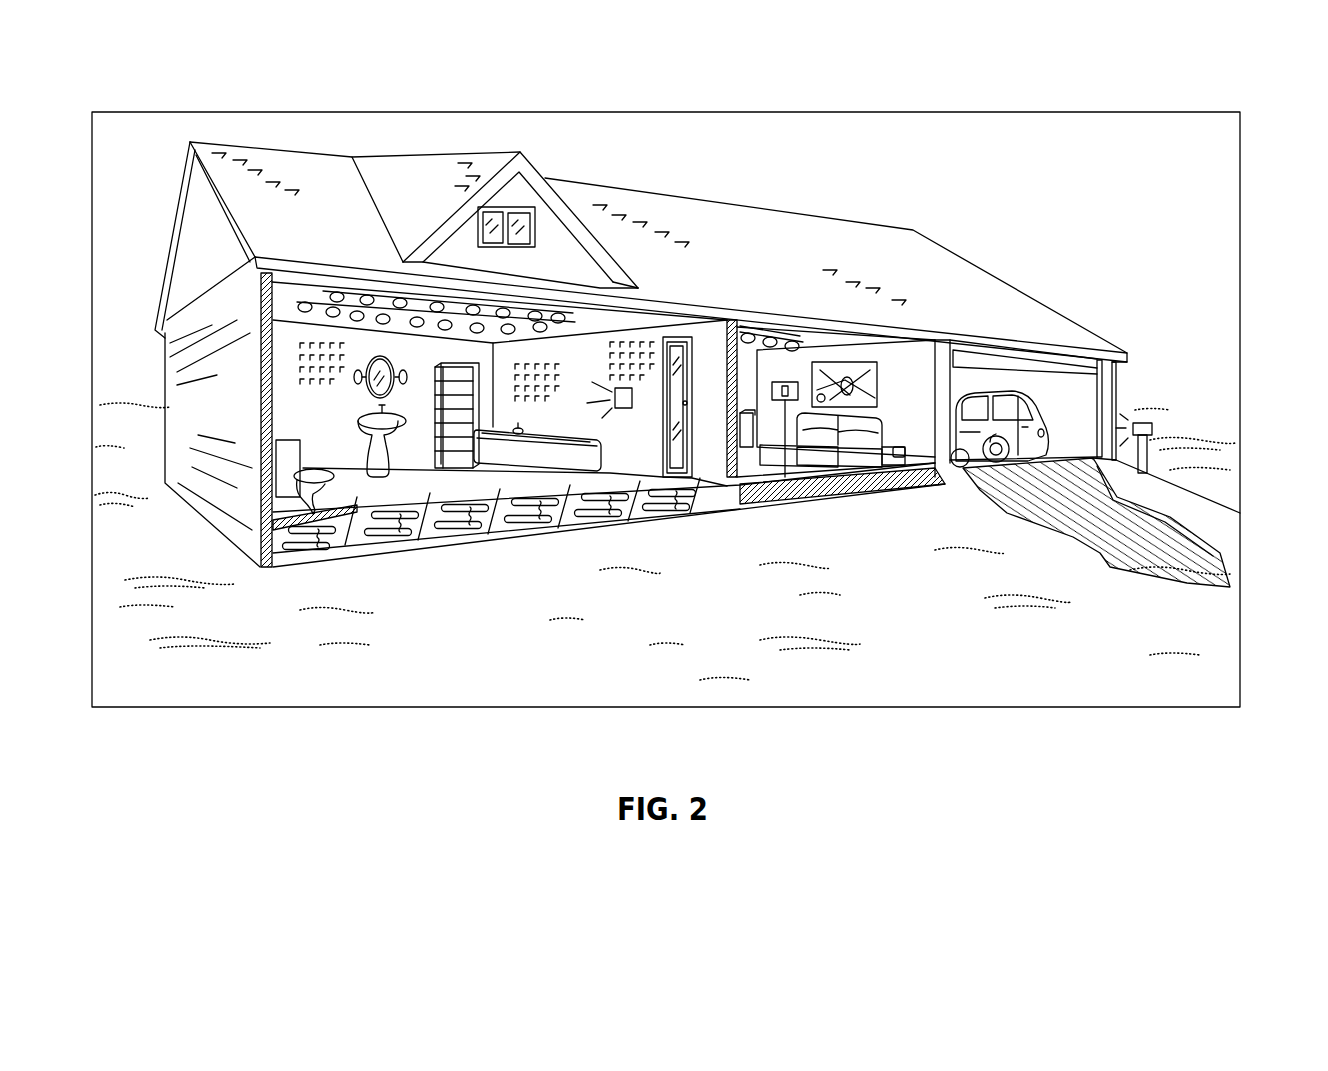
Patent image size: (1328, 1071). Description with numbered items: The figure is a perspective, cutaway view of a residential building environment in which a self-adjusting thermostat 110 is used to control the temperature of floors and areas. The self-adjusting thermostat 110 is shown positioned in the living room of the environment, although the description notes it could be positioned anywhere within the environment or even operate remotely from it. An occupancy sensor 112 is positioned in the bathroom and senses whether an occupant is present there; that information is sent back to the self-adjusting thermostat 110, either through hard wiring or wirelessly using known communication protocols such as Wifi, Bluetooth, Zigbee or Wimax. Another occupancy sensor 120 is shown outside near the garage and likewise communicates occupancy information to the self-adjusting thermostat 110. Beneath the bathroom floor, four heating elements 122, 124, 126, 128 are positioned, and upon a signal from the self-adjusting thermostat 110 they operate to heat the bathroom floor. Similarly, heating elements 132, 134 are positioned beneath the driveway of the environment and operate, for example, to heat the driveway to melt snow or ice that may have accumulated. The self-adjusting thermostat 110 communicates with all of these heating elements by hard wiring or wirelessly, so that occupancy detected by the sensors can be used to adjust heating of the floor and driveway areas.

The self-adjusting thermostat 110 is at (962, 103).
The occupancy sensor 112 is at (622, 410).
The occupancy sensor 120 is at (1150, 432).
The heating element 122 is at (508, 530).
The heating element 124 is at (570, 530).
The heating element 126 is at (653, 520).
The heating element 128 is at (713, 515).
The heating element 132 is at (1223, 552).
The heating element 134 is at (1170, 517).